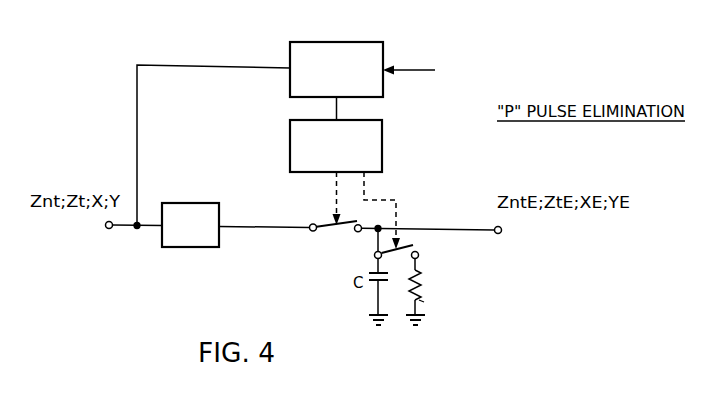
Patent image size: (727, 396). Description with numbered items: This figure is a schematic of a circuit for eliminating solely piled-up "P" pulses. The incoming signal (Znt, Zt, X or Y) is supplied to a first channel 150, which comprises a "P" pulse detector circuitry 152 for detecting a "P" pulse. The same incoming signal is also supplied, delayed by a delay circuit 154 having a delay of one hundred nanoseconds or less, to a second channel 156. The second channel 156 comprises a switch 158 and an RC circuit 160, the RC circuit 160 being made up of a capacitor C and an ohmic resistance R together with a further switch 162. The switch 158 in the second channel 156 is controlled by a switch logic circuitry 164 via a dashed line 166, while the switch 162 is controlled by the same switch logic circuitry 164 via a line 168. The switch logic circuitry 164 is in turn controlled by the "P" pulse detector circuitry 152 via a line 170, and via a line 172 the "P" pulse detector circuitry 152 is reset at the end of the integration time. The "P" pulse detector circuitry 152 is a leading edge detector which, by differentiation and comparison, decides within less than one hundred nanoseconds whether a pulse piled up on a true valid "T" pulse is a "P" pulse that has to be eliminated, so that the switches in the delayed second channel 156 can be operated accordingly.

The first channel 150 is at (251, 62).
The "P" pulse detector circuitry 152 is at (360, 48).
The delay circuit 154 is at (205, 203).
The second channel 156 is at (271, 224).
The switch 158 is at (346, 236).
The RC circuit 160 is at (393, 289).
The switch 162 is at (414, 246).
The switch logic circuitry 164 is at (376, 145).
The dashed line 166 is at (333, 206).
The line 168 is at (385, 204).
The line 170 is at (338, 108).
The line 172 is at (402, 66).